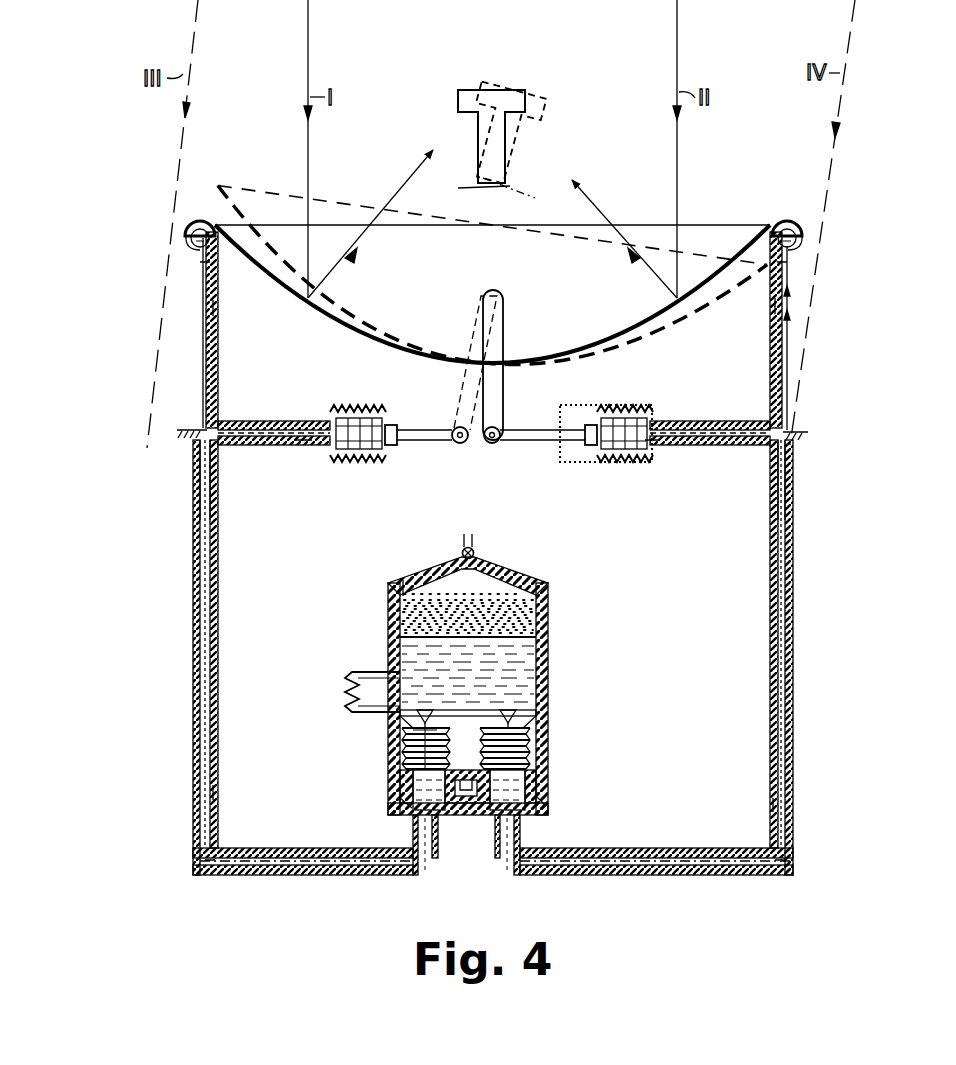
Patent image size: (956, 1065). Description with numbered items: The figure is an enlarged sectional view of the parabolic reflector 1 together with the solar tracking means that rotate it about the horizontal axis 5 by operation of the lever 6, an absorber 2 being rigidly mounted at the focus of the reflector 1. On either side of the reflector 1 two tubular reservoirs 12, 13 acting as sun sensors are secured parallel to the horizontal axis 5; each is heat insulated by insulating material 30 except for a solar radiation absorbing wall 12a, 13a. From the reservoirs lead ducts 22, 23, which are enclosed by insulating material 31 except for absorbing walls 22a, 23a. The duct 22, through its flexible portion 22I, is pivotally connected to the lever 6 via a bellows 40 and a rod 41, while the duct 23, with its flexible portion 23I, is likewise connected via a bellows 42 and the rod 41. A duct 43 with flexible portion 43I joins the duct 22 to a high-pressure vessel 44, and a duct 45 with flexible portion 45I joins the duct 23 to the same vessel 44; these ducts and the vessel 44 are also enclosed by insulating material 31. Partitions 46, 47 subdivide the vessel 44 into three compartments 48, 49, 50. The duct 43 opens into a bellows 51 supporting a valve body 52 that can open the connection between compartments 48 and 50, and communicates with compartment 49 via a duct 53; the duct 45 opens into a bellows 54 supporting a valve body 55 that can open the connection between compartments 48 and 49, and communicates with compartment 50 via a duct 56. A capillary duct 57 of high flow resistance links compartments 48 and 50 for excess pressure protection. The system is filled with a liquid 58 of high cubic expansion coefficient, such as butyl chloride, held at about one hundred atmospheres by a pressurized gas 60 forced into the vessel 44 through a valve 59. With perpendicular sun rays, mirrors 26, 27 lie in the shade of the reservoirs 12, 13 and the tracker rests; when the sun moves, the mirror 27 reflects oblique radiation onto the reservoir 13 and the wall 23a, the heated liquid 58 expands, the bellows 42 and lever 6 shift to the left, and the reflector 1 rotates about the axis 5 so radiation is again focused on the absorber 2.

The parabolic reflector 1 is at (585, 340).
The absorber 2 is at (484, 90).
The horizontal axis 5 is at (486, 293).
The lever 6 is at (495, 393).
The tubular reservoir 12 is at (180, 240).
The solar radiation absorbing wall 12a is at (192, 250).
The tubular reservoir 13 is at (797, 248).
The solar radiation absorbing wall 13a is at (800, 268).
The duct 22 is at (222, 364).
The flexible portion of duct 22 22I is at (301, 418).
The solar radiation absorbing wall 22a is at (203, 351).
The duct 23 is at (766, 364).
The flexible portion of duct 23 23I is at (686, 420).
The solar radiation absorbing wall 23a is at (770, 338).
The mirror 26 is at (186, 428).
The mirror 27 is at (797, 430).
The insulating material 30 is at (200, 222).
The insulating material 31 is at (213, 308).
The bellows 40 is at (368, 405).
The rod 41 is at (430, 430).
The bellows 42 is at (627, 405).
The duct 43 is at (222, 610).
The flexible portion of duct 43 43I is at (222, 509).
The high-pressure vessel 44 is at (528, 573).
The duct 45 is at (766, 610).
The flexible portion of duct 45 45I is at (765, 509).
The partition 46 is at (523, 706).
The partition 47 is at (480, 710).
The compartment 48 is at (528, 645).
The compartment 49 is at (548, 712).
The compartment 50 is at (410, 745).
The bellows 51 is at (399, 770).
The valve body 52 is at (398, 735).
The duct 53 is at (444, 818).
The bellows 54 is at (546, 760).
The valve body 55 is at (514, 708).
The duct 56 is at (488, 815).
The capillary duct 57 is at (345, 690).
The liquid 58 is at (207, 300).
The valve 59 is at (476, 556).
The pressurized gas 60 is at (529, 610).